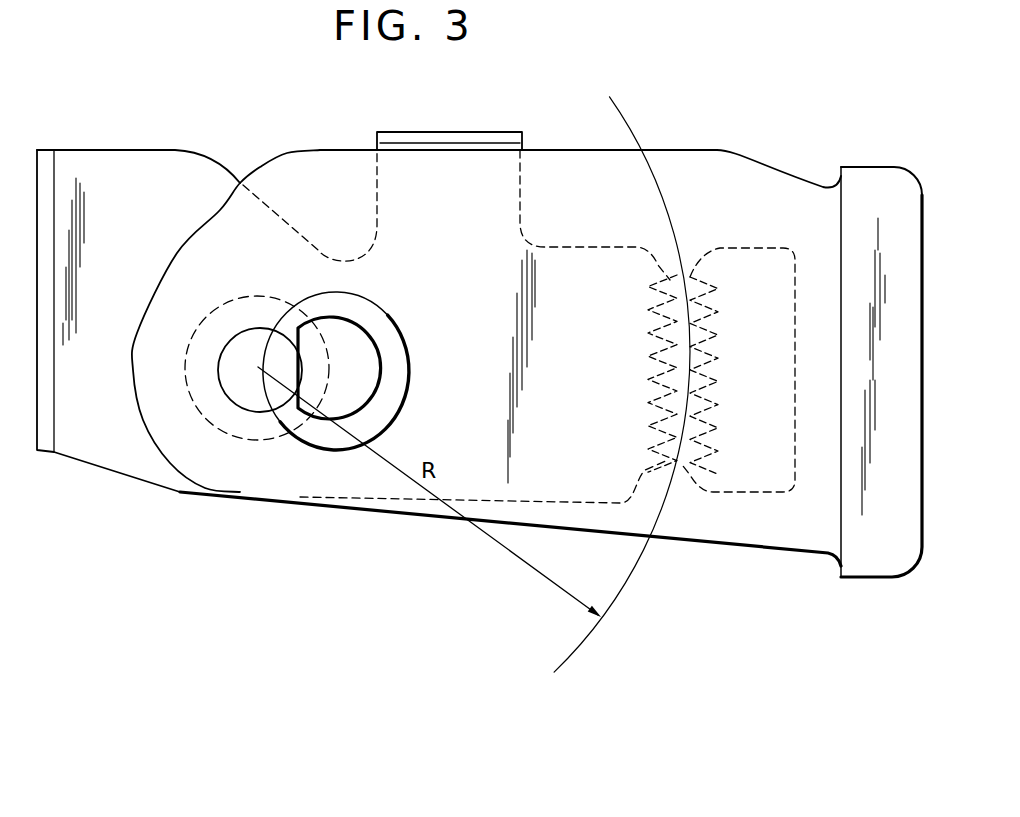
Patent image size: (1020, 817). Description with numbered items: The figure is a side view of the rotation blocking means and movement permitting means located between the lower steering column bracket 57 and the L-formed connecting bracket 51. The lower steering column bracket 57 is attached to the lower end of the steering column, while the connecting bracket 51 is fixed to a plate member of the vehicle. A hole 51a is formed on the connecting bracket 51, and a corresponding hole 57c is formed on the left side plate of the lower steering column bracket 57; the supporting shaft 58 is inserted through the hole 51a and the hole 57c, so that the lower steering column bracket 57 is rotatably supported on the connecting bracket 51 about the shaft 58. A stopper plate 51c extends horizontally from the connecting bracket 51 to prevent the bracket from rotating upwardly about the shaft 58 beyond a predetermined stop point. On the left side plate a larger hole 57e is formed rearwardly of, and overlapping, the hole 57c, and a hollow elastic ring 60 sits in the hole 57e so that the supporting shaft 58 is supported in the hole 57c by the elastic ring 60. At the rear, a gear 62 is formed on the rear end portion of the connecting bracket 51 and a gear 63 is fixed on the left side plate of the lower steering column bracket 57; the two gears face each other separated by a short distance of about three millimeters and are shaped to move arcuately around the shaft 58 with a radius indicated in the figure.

The L-formed connecting bracket 51 is at (77, 440).
The hole 51a is at (271, 482).
The stopper plate 51c is at (445, 130).
The lower steering column bracket 57 is at (728, 175).
The hole 57c is at (241, 391).
The hole 57e is at (396, 342).
The supporting shaft 58 is at (247, 352).
The hollow elastic ring 60 is at (397, 380).
The gear 62 is at (646, 384).
The gear 63 is at (722, 399).